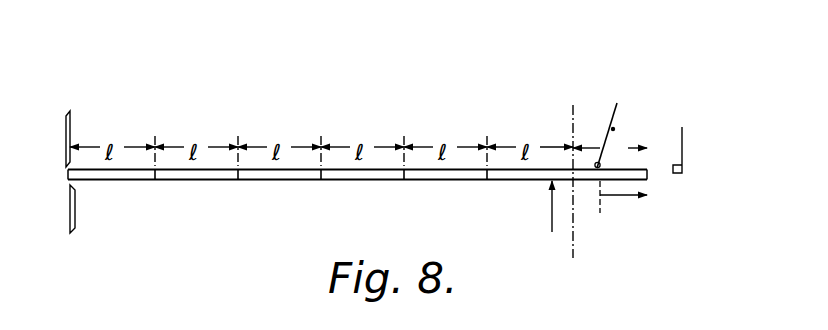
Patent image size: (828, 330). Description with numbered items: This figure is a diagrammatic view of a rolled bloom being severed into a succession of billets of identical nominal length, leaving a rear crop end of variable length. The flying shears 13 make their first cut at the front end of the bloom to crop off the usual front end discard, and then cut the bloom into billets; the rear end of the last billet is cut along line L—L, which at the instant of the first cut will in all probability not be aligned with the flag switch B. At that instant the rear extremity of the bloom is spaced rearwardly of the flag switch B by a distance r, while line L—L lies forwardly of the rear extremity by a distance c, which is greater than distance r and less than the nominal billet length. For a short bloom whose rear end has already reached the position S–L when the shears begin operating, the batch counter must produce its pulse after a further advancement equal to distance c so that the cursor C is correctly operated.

The flying shears 13 is at (70, 122).
The line L— L is at (577, 176).
The flag switch B is at (611, 124).
The cursor C is at (690, 128).
The distance c is at (610, 154).
The distance r is at (623, 202).
The position S–L SL is at (554, 218).